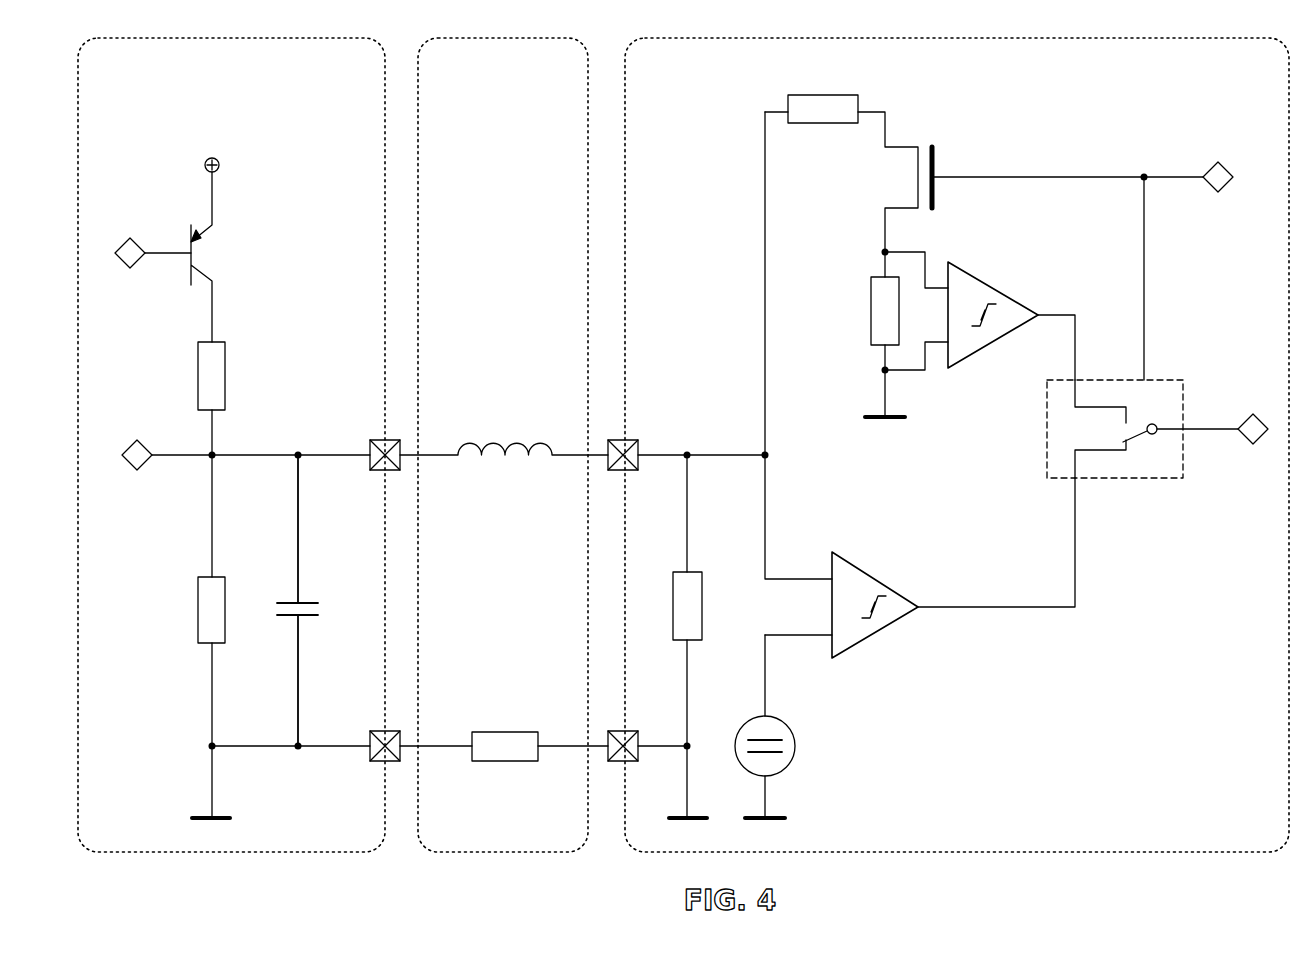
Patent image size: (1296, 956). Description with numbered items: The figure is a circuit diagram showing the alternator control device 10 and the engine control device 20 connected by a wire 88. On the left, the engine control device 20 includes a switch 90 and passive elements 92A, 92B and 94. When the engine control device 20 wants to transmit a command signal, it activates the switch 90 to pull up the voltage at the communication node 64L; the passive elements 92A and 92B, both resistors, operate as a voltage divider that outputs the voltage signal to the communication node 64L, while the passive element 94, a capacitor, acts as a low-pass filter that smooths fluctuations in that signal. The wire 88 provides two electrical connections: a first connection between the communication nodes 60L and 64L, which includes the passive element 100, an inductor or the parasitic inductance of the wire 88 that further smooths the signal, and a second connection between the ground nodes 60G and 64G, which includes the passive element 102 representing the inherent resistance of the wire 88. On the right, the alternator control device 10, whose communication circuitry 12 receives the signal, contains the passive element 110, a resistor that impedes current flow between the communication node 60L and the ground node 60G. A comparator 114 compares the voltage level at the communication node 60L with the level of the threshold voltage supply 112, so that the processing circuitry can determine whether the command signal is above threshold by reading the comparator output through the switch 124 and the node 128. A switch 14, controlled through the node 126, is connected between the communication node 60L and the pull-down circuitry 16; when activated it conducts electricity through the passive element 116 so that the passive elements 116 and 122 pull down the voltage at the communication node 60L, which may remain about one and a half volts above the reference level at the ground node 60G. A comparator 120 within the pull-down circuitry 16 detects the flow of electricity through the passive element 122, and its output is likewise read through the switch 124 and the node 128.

The alternator control device 10 is at (957, 445).
The communication circuitry 12 is at (680, 372).
The switch 14 is at (957, 160).
The pull-down circuitry 16 is at (853, 348).
The engine control device 20 is at (231, 445).
The communication node 60L is at (635, 440).
The ground node 60G is at (628, 731).
The communication node 64L is at (375, 440).
The ground node 64G is at (375, 762).
The wire 88 is at (503, 445).
The switch 90 is at (250, 232).
The passive element 92A is at (198, 375).
The passive element 92B is at (198, 613).
The passive element 94 is at (310, 603).
The passive element 100 is at (503, 408).
The passive element 102 is at (500, 732).
The passive element 110 is at (702, 600).
The threshold voltage supply 112 is at (786, 725).
The comparator 114 is at (875, 577).
The passive element 116 is at (800, 123).
The comparator 120 is at (985, 275).
The passive element 122 is at (871, 318).
The switch 124 is at (1143, 503).
The node 126 is at (1212, 165).
The node 128 is at (1255, 415).